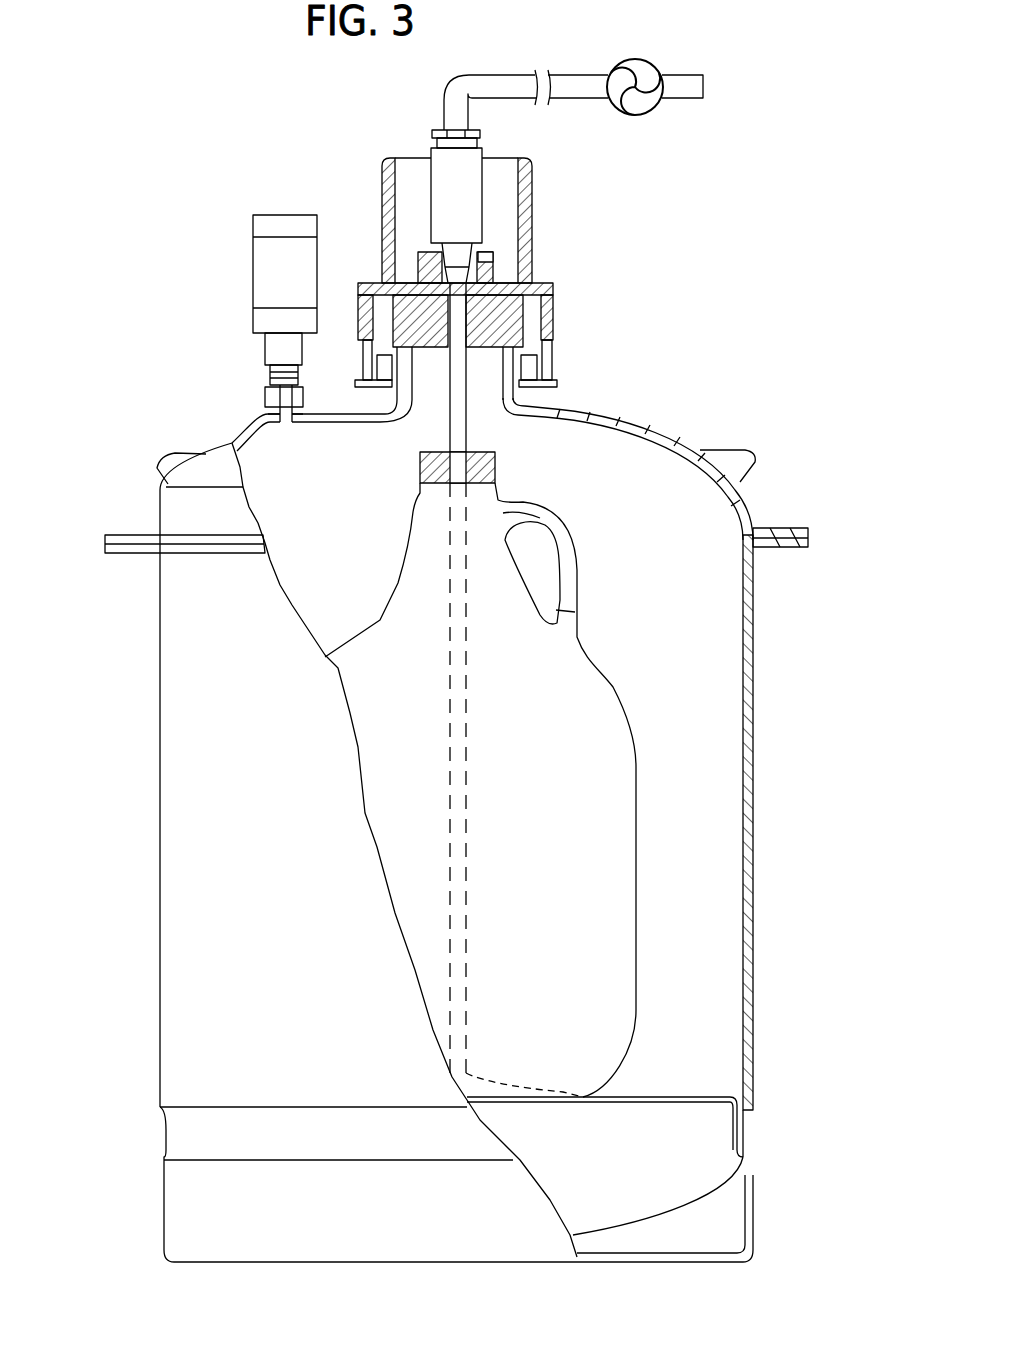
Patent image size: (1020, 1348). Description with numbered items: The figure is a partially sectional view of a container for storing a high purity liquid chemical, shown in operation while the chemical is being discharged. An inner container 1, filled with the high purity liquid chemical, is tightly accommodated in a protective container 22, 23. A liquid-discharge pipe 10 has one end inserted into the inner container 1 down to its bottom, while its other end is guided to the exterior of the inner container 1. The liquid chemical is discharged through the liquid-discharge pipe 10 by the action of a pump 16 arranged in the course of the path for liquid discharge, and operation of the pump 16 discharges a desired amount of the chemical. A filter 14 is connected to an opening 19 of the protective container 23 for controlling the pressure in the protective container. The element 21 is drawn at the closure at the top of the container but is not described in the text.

The inner container 1 is at (557, 710).
The liquid-discharge pipe 10 is at (455, 395).
The filter 14 is at (270, 265).
The pump 16 is at (652, 107).
The opening 19 is at (290, 430).
The housing 21 is at (535, 220).
The protective container 22 is at (190, 682).
The protective container 23 is at (128, 479).